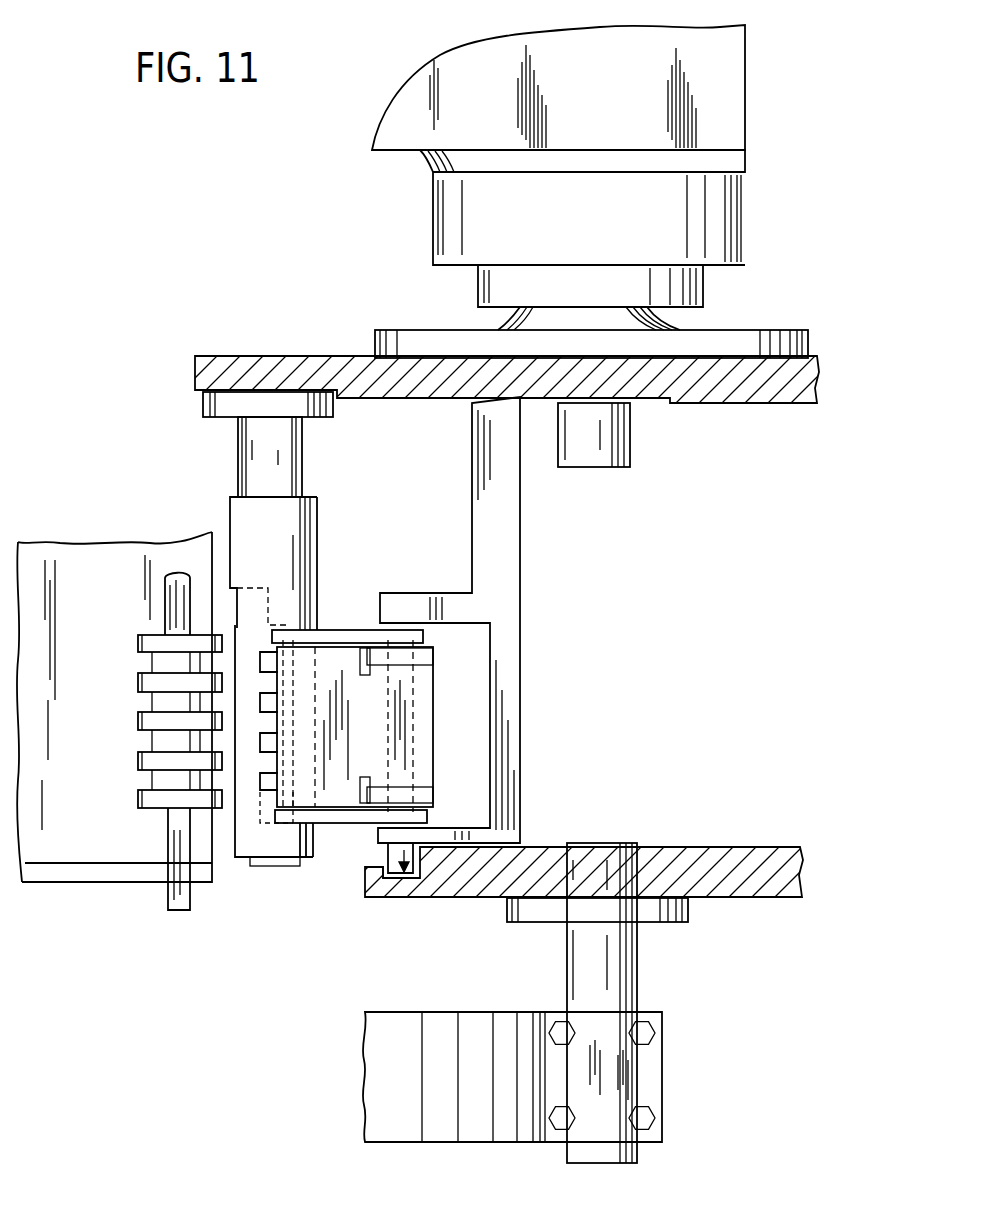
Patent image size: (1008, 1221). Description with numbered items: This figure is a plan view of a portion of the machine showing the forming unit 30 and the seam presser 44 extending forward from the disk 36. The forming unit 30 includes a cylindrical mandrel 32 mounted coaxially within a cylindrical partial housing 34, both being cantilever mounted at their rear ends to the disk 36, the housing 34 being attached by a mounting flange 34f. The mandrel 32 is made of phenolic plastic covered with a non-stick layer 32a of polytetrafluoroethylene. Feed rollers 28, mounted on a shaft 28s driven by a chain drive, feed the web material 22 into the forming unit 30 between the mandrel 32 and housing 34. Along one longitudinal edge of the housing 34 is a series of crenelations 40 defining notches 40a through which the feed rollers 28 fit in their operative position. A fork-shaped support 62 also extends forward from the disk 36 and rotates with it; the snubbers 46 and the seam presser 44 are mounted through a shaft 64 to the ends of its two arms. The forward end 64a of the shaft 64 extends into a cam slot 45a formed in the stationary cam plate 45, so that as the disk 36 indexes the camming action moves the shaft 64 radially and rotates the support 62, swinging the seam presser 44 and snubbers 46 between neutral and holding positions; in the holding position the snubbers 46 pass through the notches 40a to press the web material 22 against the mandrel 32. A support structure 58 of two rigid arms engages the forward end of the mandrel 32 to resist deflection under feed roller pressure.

The web material 22 is at (68, 887).
The feed rollers 28 is at (138, 683).
The shaft 28s is at (170, 617).
The forming unit 30 is at (325, 495).
The mandrel 32 is at (290, 467).
The layer of polytetrafluoroethylene 32a is at (247, 866).
The housing 34 is at (296, 548).
The mounting flange 34f is at (203, 406).
The disk 36 is at (272, 358).
The crenelations 40 is at (265, 655).
The notches 40a is at (263, 800).
The seam presser 44 is at (335, 665).
The cam plate 45 is at (485, 892).
The cam slot 45a is at (366, 897).
The snubbers 46 is at (364, 630).
The support structure 58 is at (375, 1081).
The fork-shaped support 62 is at (512, 532).
The shaft 64 is at (412, 733).
The forward end of shaft 64a is at (411, 878).